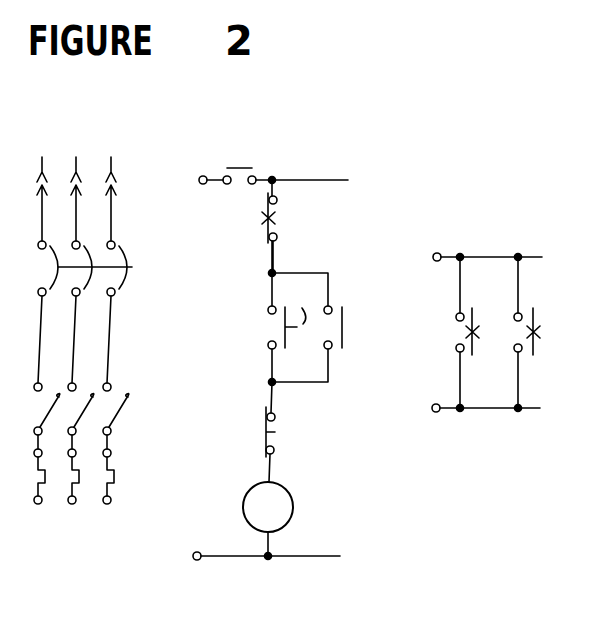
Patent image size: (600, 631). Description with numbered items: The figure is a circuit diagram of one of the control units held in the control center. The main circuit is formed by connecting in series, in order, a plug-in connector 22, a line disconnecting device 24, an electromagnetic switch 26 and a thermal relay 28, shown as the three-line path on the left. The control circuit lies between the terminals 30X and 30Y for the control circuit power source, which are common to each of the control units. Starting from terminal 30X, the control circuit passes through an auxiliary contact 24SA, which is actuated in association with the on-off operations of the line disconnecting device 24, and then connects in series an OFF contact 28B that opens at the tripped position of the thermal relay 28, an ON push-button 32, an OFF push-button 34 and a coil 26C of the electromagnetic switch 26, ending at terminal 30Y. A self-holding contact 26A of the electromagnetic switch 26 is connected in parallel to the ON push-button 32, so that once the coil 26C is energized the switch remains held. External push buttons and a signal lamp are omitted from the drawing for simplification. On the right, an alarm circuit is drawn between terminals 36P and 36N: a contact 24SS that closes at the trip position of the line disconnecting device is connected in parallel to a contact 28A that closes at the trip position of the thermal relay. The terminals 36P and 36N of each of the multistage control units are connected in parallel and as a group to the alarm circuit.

The plug-in connector 22 is at (120, 173).
The line disconnecting device 24 is at (132, 255).
The electromagnetic switch 26 is at (118, 417).
The thermal relay 28 is at (117, 480).
The control circuit power source terminal 30X is at (203, 175).
The auxiliary contact 24SA is at (242, 165).
The OFF contact 28B is at (287, 217).
The ON push-button 32 is at (294, 311).
The self-holding contact 26A is at (343, 325).
The OFF push-button 34 is at (277, 425).
The coil 26C is at (293, 500).
The control circuit power source terminal 30Y is at (197, 560).
The alarm circuit terminal 36P is at (437, 254).
The trip position contact of line disconnecting device 24SS is at (473, 315).
The trip position contact of thermal relay 28A is at (537, 318).
The alarm circuit terminal 36N is at (436, 412).